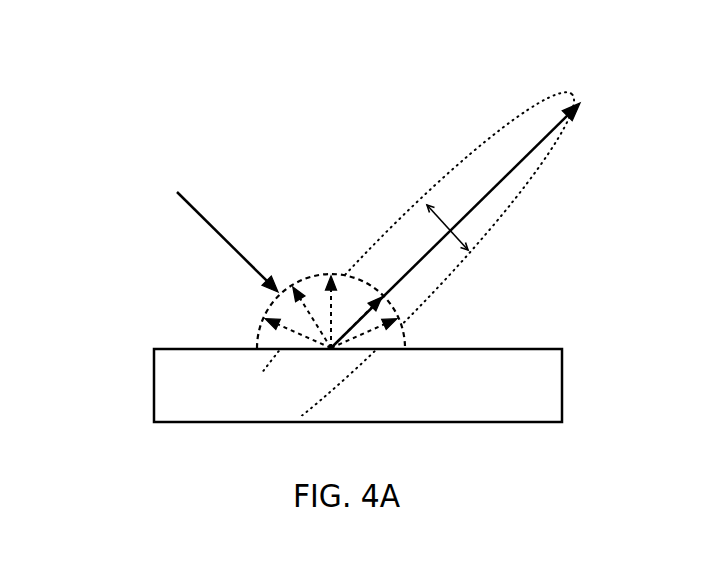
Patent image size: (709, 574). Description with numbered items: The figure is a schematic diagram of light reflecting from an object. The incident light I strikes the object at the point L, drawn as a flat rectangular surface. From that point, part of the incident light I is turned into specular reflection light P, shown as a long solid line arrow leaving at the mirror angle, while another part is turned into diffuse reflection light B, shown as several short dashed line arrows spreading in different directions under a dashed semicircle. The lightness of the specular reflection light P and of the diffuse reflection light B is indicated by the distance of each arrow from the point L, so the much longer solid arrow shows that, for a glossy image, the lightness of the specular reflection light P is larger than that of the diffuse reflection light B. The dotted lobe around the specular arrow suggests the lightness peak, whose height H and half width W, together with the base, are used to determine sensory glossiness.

The incident light I is at (217, 220).
The diffuse reflection light B is at (331, 293).
The specular reflection light P is at (469, 199).
The height of a peak H is at (415, 269).
The half width of a peak W is at (470, 244).
The point where the incident light was incident L is at (358, 385).